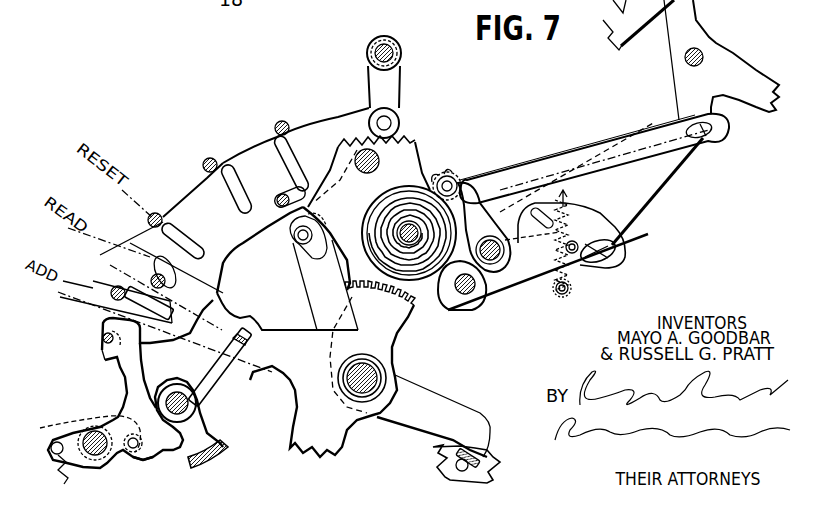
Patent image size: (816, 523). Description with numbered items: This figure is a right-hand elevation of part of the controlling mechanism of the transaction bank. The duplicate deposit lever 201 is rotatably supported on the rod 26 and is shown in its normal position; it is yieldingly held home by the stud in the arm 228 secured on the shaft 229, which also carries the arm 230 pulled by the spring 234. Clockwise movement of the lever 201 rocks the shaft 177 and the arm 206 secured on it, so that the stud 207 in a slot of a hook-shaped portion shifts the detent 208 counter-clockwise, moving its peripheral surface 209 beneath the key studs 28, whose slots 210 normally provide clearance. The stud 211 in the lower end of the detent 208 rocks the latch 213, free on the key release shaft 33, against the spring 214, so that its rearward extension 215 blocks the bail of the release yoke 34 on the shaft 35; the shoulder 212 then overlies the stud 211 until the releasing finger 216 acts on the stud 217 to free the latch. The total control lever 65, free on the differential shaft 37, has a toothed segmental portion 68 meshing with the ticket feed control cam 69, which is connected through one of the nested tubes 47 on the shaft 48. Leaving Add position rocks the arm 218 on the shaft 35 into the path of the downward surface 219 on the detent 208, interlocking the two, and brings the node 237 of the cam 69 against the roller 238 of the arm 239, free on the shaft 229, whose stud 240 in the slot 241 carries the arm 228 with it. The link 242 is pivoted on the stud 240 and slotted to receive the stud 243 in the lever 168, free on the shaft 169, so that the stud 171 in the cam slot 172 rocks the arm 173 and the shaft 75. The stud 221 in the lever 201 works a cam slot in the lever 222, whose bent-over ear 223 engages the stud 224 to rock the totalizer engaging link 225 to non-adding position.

The rod 26 is at (360, 158).
The key studs 28 is at (275, 128).
The key release shaft 33 is at (97, 452).
The release yoke 34 is at (221, 453).
The shaft 35 is at (196, 404).
The differential shaft 37 is at (373, 378).
The nested tubes 47 is at (435, 278).
The shaft 48 is at (372, 218).
The total control lever 65 is at (112, 288).
The segmental portion 68 is at (388, 333).
The ticket feed control cam 69 is at (352, 263).
The shaft 75 is at (470, 296).
The lever 168 is at (680, 83).
The shaft 169 is at (685, 57).
The stud 171 is at (615, 251).
The cam slot 172 is at (612, 259).
The arm 173 is at (596, 268).
The shaft 177 is at (377, 42).
The duplicate deposit lever 201 is at (399, 158).
The arm 206 is at (398, 83).
The stud 207 is at (392, 119).
The detent 208 is at (332, 124).
The peripheral surface 209 is at (183, 204).
The slots 210 is at (222, 193).
The stud 211 is at (103, 339).
The shoulder 212 is at (105, 358).
The latch 213 is at (125, 377).
The spring 214 is at (55, 455).
The rearward extension 215 is at (166, 451).
The releasing finger 216 is at (60, 438).
The stud 217 is at (127, 437).
The arm 218 is at (220, 385).
The downward surface 219 is at (253, 323).
The stud 221 is at (297, 240).
The lever 222 is at (307, 267).
The bent-over ear 223 is at (488, 453).
The stud 224 is at (453, 470).
The totalizer engaging link 225 is at (448, 454).
The arm 228 is at (452, 176).
The shaft 229 is at (495, 266).
The arm 230 is at (558, 296).
The spring 234 is at (610, 223).
The node 237 is at (544, 158).
The roller 238 is at (450, 180).
The arm 239 is at (558, 207).
The stud 240 is at (478, 190).
The slot 241 is at (400, 156).
The link 242 is at (600, 156).
The stud 243 is at (703, 140).